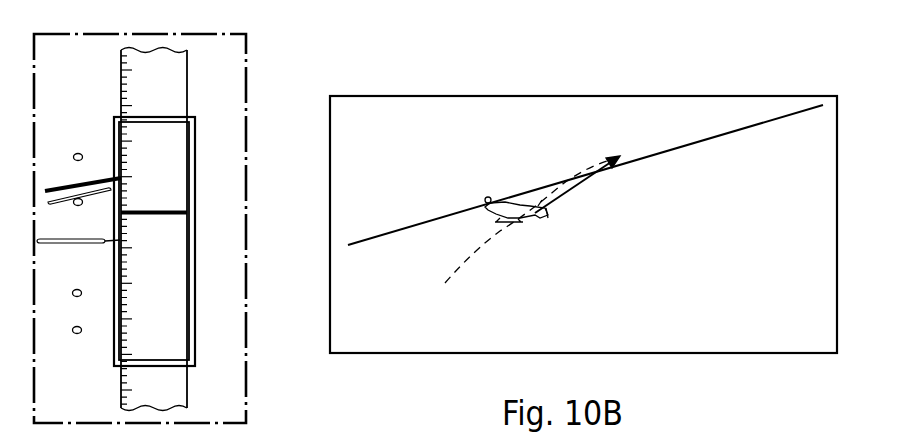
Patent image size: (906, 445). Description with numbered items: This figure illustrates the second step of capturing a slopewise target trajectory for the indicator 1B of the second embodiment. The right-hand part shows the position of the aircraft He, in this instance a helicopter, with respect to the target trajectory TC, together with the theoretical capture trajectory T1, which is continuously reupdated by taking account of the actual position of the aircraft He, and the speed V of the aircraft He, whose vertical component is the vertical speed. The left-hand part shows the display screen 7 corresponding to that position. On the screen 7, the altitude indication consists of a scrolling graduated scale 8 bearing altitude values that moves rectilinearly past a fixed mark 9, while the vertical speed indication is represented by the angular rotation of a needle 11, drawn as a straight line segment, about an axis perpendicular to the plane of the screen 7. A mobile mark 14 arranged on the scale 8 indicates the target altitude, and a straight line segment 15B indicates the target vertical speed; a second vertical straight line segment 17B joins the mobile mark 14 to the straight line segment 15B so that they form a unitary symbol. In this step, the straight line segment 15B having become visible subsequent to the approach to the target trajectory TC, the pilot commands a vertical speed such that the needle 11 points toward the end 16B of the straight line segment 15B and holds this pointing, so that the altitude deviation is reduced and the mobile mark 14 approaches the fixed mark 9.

The indicator 1B is at (265, 110).
The display screen 7 is at (245, 323).
The scrolling graduated scale 8 is at (175, 393).
The fixed mark 9 is at (55, 245).
The needle 11 is at (64, 202).
The mobile mark 14 is at (164, 216).
The straight line segment 15B is at (64, 184).
The end of the straight line segment 16B is at (133, 175).
The second vertical straight line segment 17B is at (123, 196).
The target trajectory TC is at (445, 218).
The theoretical capture trajectory T1 is at (472, 255).
The speed V is at (564, 190).
The aircraft He is at (530, 228).